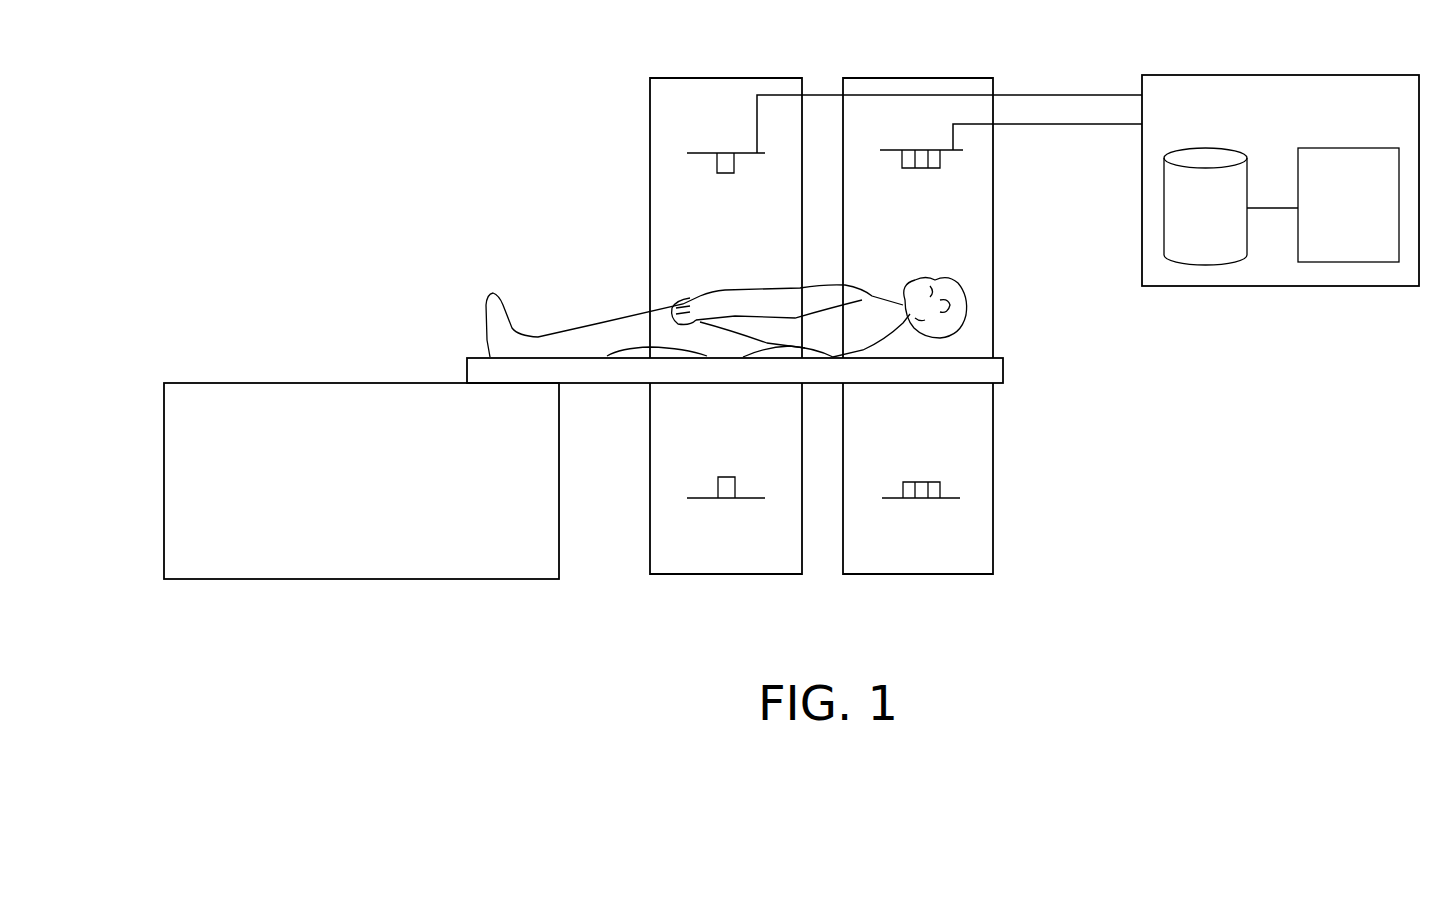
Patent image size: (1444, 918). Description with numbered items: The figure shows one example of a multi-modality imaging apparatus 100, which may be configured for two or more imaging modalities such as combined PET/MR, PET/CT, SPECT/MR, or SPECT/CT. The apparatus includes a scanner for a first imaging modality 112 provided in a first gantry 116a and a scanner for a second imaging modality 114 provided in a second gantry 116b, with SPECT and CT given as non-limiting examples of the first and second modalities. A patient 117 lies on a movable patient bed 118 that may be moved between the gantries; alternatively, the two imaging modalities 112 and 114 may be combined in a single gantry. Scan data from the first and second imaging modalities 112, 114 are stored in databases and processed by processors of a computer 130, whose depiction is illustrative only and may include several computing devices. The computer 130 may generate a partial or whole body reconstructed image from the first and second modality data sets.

The multi-modality imaging apparatus 100 is at (382, 153).
The first imaging modality 112 is at (687, 152).
The second imaging modality 114 is at (942, 158).
The first gantry 116a is at (722, 78).
The second gantry 116b is at (917, 78).
The patient 117 is at (617, 315).
The movable patient bed 118 is at (472, 358).
The computer 130 is at (1176, 74).